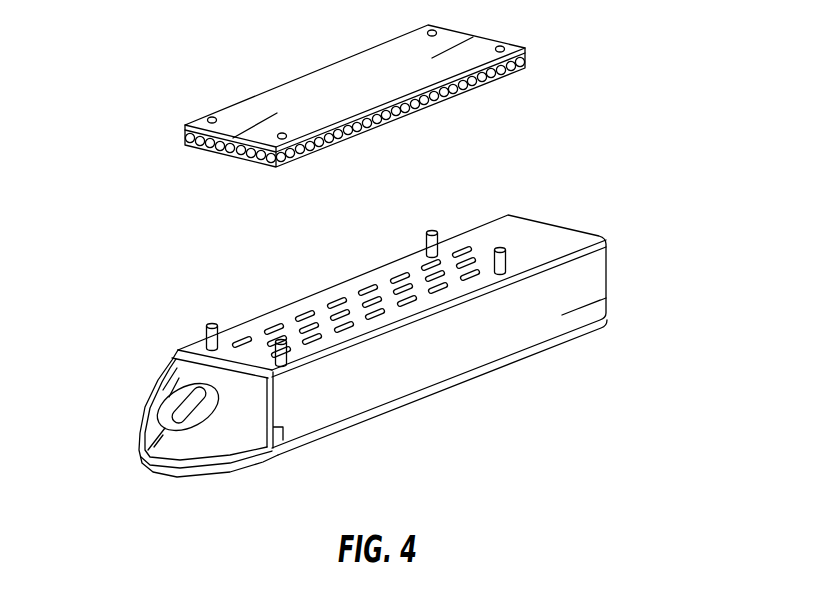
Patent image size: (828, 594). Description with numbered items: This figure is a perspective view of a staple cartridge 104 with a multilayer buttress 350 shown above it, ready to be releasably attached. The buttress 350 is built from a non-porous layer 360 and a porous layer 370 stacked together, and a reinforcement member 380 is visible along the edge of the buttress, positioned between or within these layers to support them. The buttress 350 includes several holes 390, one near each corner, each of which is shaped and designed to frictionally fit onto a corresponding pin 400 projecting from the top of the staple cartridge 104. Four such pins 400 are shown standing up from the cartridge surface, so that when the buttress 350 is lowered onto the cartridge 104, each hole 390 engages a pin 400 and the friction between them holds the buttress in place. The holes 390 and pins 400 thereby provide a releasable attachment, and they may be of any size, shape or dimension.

The staple cartridge 104 is at (362, 346).
The multilayer buttress 350 is at (375, 105).
The non-porous layer 360 is at (526, 61).
The porous layer 370 is at (527, 52).
The reinforcement member 380 is at (223, 157).
The hole 390 is at (293, 68).
The pin 400 is at (207, 328).